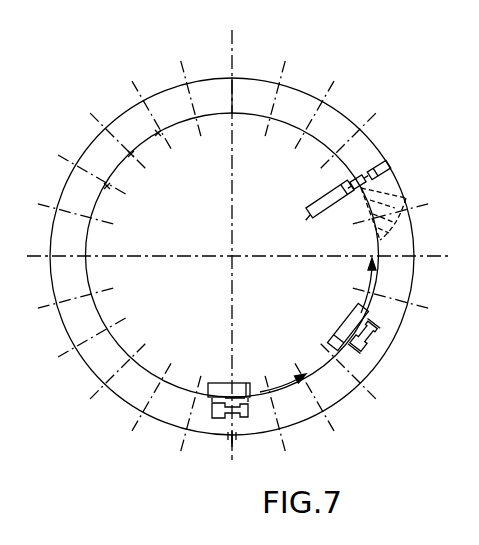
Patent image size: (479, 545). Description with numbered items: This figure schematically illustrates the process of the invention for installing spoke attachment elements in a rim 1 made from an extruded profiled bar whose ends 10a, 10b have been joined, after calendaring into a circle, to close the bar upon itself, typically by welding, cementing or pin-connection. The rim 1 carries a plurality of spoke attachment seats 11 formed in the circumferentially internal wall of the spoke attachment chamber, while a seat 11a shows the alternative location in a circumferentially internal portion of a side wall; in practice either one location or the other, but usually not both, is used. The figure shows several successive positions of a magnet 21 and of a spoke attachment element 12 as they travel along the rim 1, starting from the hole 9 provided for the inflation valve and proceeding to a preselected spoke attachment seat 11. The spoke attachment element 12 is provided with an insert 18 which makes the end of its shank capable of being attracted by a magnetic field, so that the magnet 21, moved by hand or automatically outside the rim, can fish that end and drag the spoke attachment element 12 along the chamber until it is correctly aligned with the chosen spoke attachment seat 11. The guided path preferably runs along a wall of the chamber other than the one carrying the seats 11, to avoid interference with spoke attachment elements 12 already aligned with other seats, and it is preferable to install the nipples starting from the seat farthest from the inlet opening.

The rim 1 is at (112, 88).
The hole 9 is at (232, 450).
The end of the profiled bar 10a is at (233, 90).
The end of the profiled bar 10b is at (323, 262).
The spoke attachment seat 11 is at (157, 133).
The spoke attachment seat 11a is at (362, 193).
The spoke attachment element 12 is at (386, 166).
The insert 18 is at (356, 180).
The magnet 21 is at (310, 203).